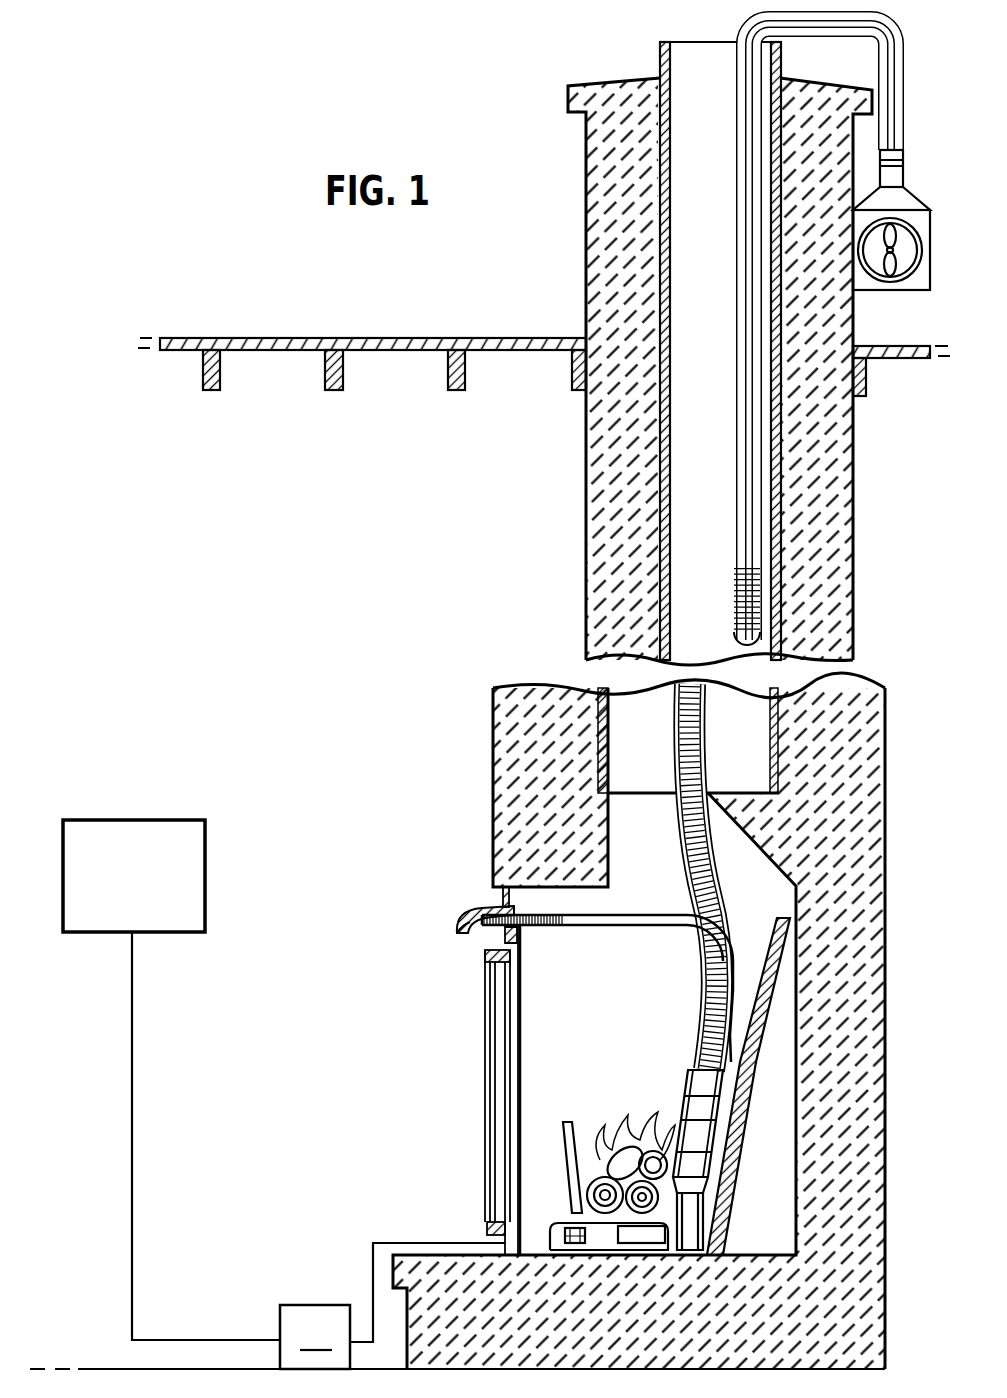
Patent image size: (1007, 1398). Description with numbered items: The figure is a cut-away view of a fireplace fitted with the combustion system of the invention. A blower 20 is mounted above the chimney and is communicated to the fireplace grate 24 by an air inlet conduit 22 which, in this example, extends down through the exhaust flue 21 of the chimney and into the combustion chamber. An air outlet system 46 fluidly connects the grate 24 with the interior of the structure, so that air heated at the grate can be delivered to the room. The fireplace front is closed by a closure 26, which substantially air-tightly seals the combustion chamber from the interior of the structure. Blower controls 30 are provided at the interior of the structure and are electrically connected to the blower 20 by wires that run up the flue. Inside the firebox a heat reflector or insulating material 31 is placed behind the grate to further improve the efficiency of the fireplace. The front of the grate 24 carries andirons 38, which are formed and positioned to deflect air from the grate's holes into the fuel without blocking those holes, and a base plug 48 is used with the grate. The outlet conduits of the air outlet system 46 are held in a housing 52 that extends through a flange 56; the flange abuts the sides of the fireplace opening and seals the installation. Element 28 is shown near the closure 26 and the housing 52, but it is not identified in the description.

The blower 20 is at (864, 287).
The exhaust flue 21 is at (669, 520).
The air inlet conduit 22 is at (737, 368).
The fireplace grate 24 is at (674, 1078).
The closure 26 is at (478, 1065).
The door seal 28 is at (460, 935).
The blower controls 30 is at (205, 840).
The heat reflector or insulating material 31 is at (760, 1090).
The andirons 38 is at (562, 1158).
The air outlet system 46 is at (588, 926).
The base plug 48 is at (650, 1244).
The housing 52 is at (447, 911).
The flange 56 is at (494, 893).